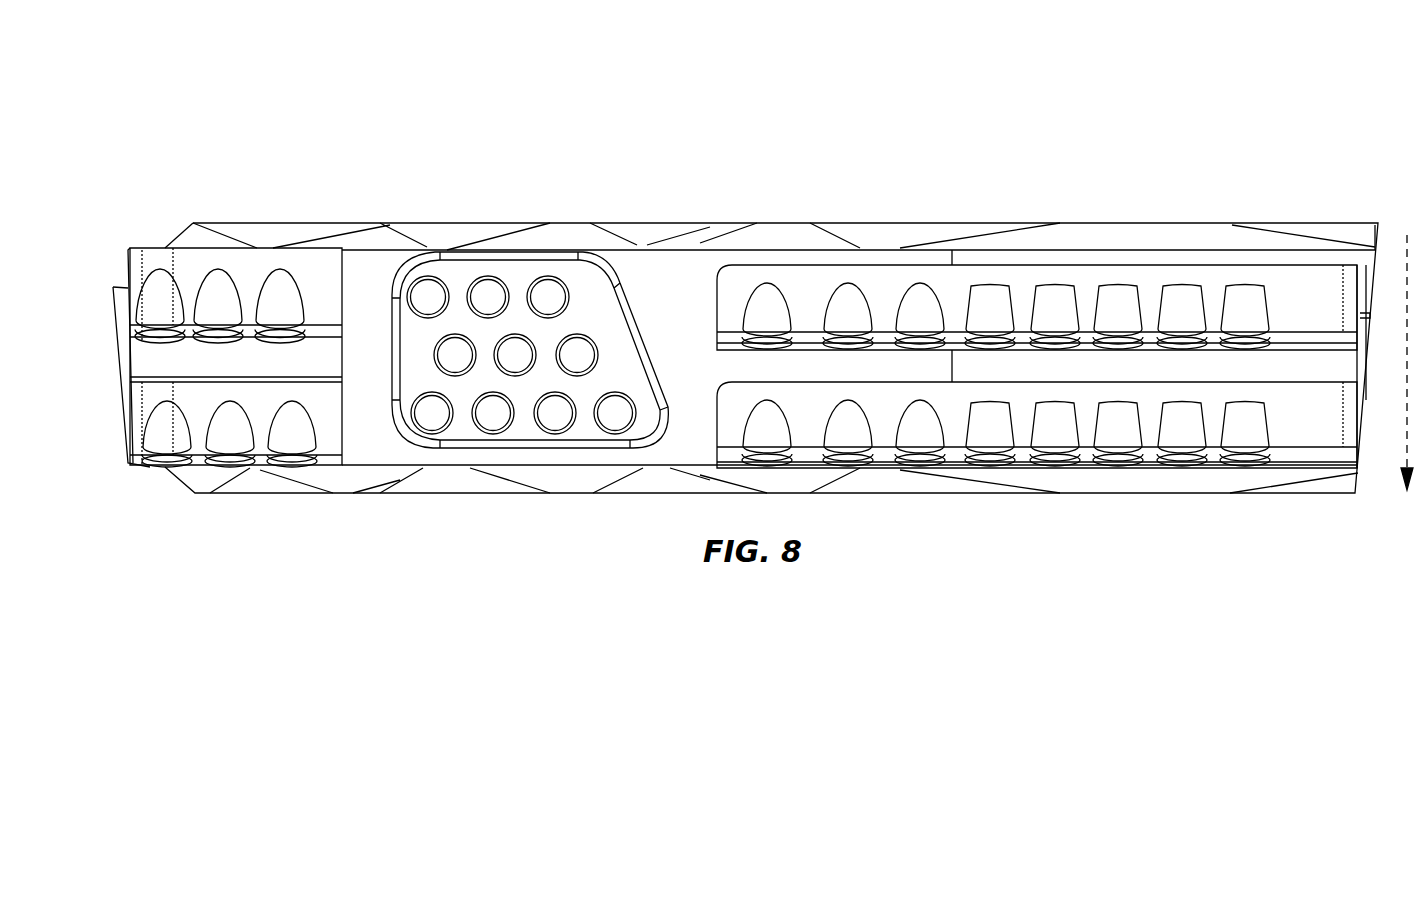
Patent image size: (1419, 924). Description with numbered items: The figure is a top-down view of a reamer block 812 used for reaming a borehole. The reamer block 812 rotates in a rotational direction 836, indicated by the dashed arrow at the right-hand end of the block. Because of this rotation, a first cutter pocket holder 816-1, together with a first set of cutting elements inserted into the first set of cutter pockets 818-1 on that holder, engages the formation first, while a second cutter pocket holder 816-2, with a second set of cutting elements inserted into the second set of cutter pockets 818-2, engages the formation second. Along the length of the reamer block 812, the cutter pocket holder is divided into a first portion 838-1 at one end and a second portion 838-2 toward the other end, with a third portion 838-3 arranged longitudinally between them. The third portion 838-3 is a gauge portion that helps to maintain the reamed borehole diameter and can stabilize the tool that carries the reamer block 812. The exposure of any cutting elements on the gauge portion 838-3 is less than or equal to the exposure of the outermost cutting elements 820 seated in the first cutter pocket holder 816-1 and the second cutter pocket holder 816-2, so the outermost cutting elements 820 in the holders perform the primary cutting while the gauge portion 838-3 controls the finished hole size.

The reamer block 812 is at (1325, 92).
The first cutter pocket holder 816-1 is at (135, 433).
The second cutter pocket holder 816-2 is at (133, 270).
The first set of cutter pockets 818-1 is at (149, 416).
The second set of cutter pockets 818-2 is at (142, 286).
The outermost cutting elements 820 is at (1045, 302).
The rotational direction 836 is at (1402, 450).
The first portion 838-1 is at (191, 327).
The second portion 838-2 is at (1037, 332).
The third portion (gauge portion) 838-3 is at (513, 275).